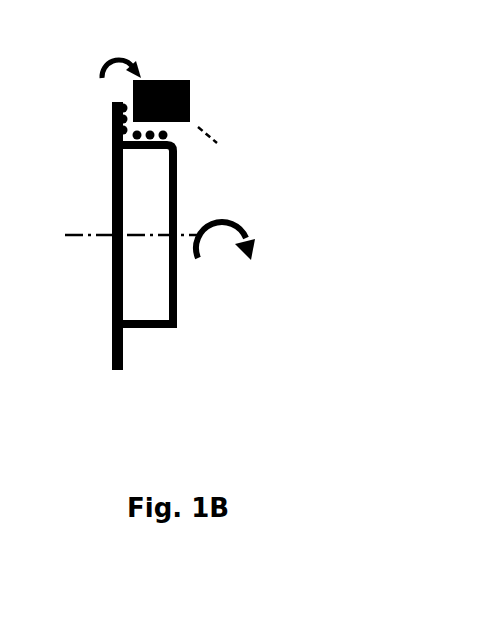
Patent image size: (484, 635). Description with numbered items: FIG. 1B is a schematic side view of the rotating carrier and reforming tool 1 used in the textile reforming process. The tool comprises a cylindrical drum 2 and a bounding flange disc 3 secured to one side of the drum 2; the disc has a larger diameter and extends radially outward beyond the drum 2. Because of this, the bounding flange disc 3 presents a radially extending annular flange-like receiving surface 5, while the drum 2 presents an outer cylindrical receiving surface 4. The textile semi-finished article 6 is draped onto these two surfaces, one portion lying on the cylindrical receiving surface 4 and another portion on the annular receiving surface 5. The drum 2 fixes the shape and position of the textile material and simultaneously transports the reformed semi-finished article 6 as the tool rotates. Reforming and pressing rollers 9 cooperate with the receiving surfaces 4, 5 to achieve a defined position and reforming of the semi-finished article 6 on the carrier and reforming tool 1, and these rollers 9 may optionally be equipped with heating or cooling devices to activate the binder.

The rotating carrier and reforming tool 1 is at (180, 280).
The cylindrical drum 2 is at (177, 175).
The bounding flange disc 3 is at (110, 290).
The outer cylindrical receiving surface 4 is at (152, 328).
The annular flange-like receiving surface 5 is at (123, 348).
The textile semi-finished article 6 is at (168, 135).
The reforming and pressing rollers 9 is at (190, 88).